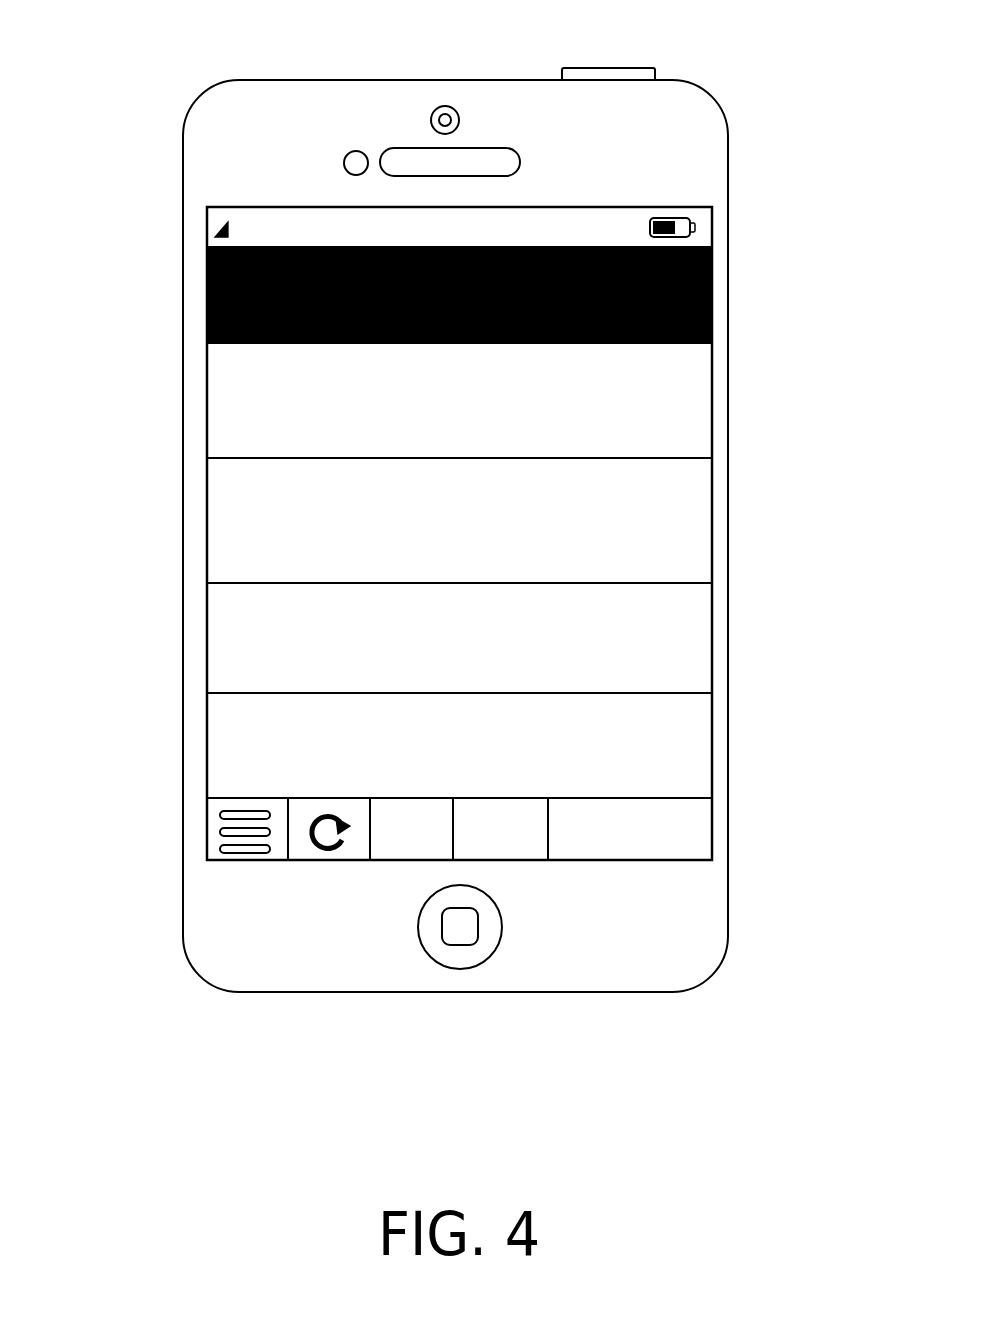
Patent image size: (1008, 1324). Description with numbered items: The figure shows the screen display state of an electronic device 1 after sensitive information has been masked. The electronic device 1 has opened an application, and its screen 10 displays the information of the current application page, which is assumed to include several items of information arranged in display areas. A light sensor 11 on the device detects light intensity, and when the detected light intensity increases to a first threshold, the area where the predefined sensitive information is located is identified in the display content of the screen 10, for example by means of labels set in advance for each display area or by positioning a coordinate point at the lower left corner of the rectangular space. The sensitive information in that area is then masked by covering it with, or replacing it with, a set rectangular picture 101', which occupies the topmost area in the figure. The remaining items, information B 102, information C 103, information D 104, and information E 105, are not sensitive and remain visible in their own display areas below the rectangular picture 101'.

The electronic device 1 is at (688, 167).
The light sensor 11 is at (366, 155).
The screen 10 is at (238, 548).
The rectangular picture 101' is at (556, 295).
The information B 102 is at (688, 398).
The information C 103 is at (688, 533).
The information D 104 is at (688, 635).
The information E 105 is at (688, 763).